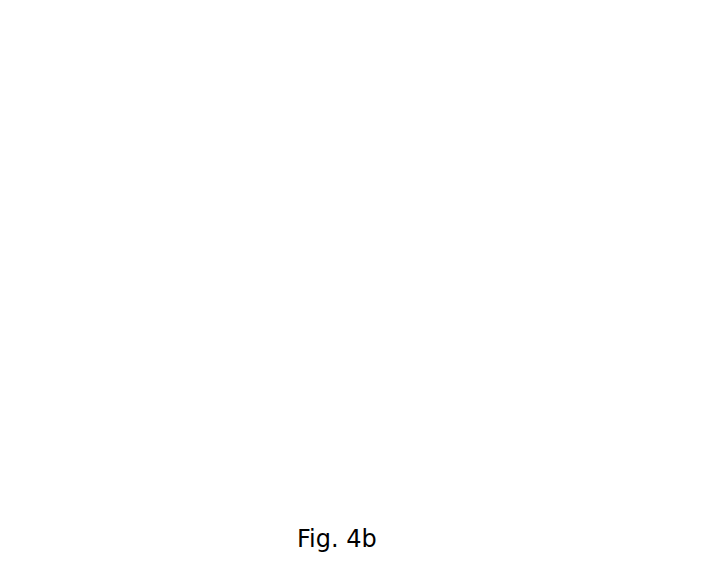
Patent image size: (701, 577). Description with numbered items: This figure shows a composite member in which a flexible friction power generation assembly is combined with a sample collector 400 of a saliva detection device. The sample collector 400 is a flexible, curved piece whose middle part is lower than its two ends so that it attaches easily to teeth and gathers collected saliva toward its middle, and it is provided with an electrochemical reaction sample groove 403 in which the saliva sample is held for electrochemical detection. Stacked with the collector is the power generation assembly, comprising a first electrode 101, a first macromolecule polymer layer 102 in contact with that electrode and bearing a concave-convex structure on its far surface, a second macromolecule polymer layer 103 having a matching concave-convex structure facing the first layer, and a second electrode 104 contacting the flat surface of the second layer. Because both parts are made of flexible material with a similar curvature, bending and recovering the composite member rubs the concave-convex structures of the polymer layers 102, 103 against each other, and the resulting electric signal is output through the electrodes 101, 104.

The sample collector 400 is at (124, 332).
The electrochemical reaction sample groove 403 is at (416, 184).
The first electrode 101 is at (204, 432).
The first macromolecule polymer layer 102 is at (262, 413).
The second macromolecule polymer layer 103 is at (279, 380).
The second electrode 104 is at (312, 335).